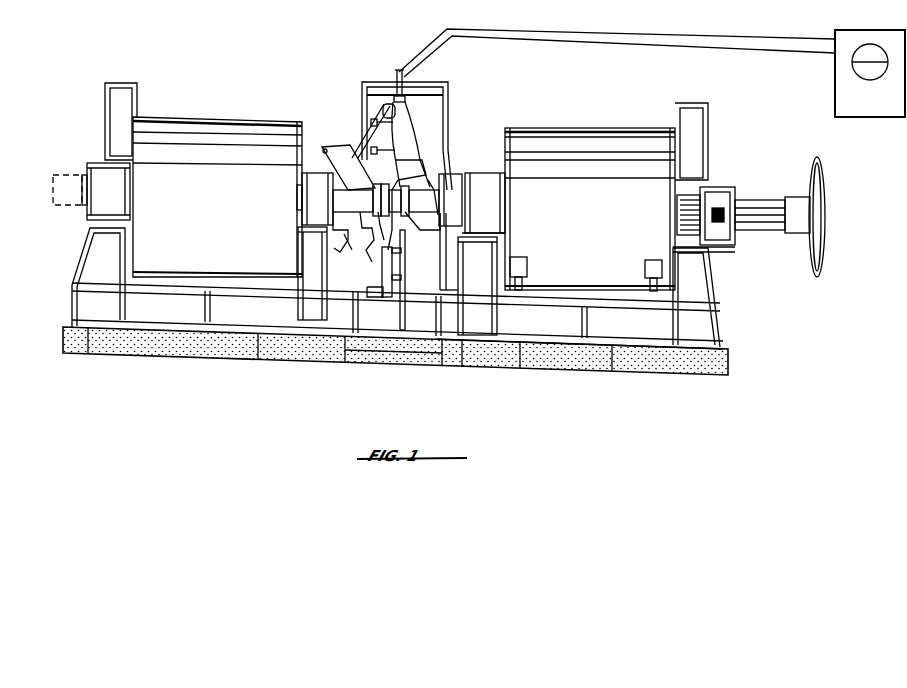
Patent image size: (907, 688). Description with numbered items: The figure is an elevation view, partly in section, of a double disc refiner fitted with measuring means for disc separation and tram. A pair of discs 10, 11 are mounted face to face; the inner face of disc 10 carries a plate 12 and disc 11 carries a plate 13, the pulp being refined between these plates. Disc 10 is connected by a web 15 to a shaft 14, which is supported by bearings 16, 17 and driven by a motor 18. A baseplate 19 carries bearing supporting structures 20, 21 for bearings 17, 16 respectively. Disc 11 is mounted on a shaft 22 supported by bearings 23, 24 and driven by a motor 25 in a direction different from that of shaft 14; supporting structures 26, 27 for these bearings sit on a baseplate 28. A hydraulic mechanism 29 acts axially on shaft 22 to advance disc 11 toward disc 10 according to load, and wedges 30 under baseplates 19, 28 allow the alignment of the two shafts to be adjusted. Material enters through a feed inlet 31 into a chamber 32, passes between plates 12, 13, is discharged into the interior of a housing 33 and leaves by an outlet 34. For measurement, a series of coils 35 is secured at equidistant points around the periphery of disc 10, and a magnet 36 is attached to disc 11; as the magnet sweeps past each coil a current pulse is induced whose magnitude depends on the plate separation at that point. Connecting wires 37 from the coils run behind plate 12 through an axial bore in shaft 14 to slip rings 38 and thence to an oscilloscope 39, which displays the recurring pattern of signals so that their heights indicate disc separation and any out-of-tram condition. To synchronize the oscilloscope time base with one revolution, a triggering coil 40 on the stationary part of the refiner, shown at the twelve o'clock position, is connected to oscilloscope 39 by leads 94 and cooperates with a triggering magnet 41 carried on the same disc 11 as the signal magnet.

The disc 10 is at (384, 108).
The disc 11 is at (409, 128).
The plate 12 is at (372, 121).
The plate 13 is at (406, 145).
The shaft 14 is at (380, 192).
The web 15 is at (366, 246).
The bearing 16 is at (98, 165).
The bearing 17 is at (316, 172).
The motor 18 is at (240, 120).
The baseplate 19 is at (258, 352).
The bearing supporting structure 20 is at (342, 244).
The bearing supporting structure 21 is at (80, 262).
The shaft 22 is at (452, 190).
The bearing 23 is at (484, 188).
The bearing 24 is at (713, 188).
The motor 25 is at (582, 130).
The supporting structure 26 is at (470, 318).
The supporting structure 27 is at (722, 297).
The baseplate 28 is at (518, 332).
The hydraulic mechanism 29 is at (770, 205).
The wedges 30 is at (88, 352).
The feed inlet 31 is at (340, 150).
The chamber 32 is at (413, 184).
The housing 33 is at (380, 82).
The outlet 34 is at (392, 362).
The coils 35 is at (370, 96).
The magnet 36 is at (404, 100).
The connecting wires 37 is at (414, 165).
The slip rings 38 is at (58, 204).
The oscilloscope 39 is at (848, 81).
The triggering coil 40 is at (398, 78).
The triggering magnet 41 is at (386, 300).
The leads 94 is at (578, 44).